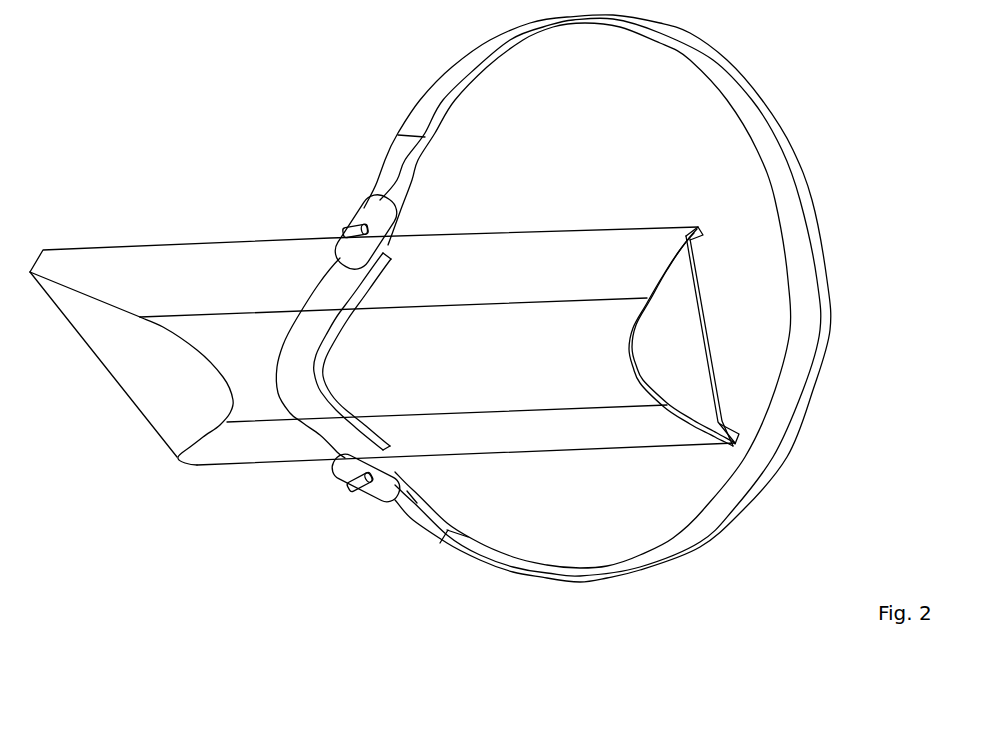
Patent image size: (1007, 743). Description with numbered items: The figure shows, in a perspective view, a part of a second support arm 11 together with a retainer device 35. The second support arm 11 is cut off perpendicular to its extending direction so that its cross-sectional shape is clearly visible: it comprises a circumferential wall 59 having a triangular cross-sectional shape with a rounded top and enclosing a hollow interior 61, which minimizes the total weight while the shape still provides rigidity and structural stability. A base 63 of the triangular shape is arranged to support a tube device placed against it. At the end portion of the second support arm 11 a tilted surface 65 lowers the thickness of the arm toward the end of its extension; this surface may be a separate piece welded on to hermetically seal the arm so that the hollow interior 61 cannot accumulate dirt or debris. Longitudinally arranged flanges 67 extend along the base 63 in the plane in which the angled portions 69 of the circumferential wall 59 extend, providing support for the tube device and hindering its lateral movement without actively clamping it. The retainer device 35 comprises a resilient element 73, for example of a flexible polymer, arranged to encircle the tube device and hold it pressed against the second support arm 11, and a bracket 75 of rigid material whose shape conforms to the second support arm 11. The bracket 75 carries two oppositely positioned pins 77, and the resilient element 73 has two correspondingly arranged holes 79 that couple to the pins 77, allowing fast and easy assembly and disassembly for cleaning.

The second support arm 11 is at (100, 255).
The retainer device 35 is at (398, 82).
The circumferential wall 59 is at (680, 260).
The hollow interior 61 is at (687, 353).
The base 63 is at (702, 300).
The tilted surface 65 is at (177, 428).
The longitudinally arranged flanges 67 is at (698, 227).
The angled portions 69 is at (522, 250).
The resilient element 73 is at (753, 88).
The bracket 75 is at (293, 347).
The pins 77 is at (342, 224).
The holes 79 is at (367, 226).